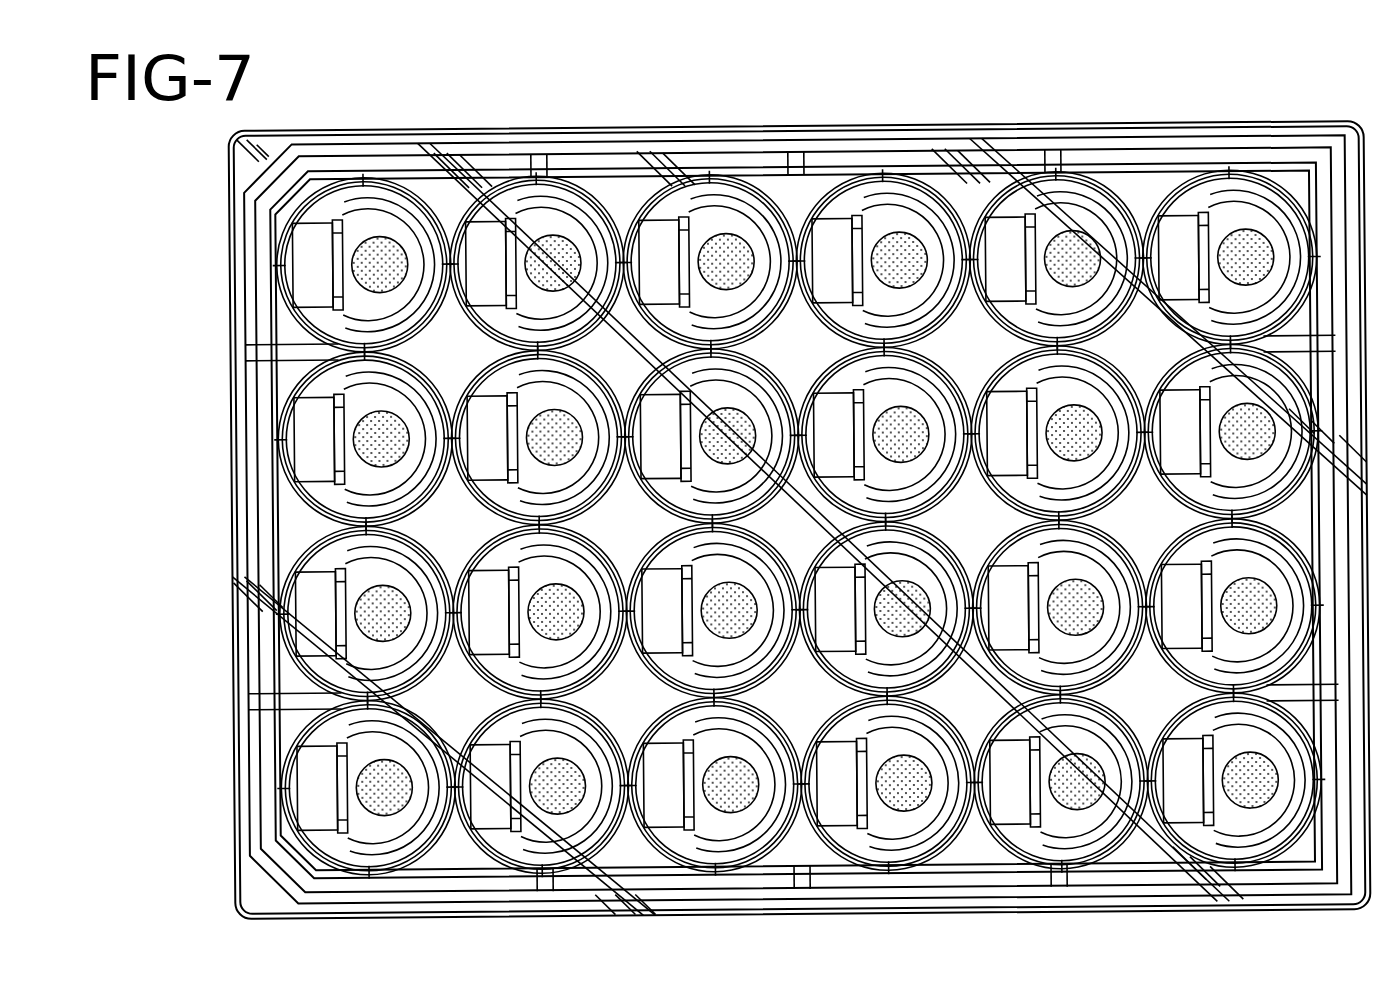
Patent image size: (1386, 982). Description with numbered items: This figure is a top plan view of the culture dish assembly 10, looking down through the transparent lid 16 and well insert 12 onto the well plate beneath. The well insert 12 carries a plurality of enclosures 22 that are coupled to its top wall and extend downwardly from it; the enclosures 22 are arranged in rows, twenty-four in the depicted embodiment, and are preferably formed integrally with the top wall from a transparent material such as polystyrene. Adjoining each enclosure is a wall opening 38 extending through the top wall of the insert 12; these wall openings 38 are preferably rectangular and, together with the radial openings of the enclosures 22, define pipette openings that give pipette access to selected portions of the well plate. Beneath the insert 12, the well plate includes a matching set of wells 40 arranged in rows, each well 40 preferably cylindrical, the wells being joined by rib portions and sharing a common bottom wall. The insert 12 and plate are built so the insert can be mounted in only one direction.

The culture dish assembly 10 is at (1238, 82).
The well insert 12 is at (234, 700).
The lid 16 is at (234, 866).
The enclosures 22 is at (900, 215).
The wall openings 38 is at (1000, 233).
The wells 40 is at (467, 186).